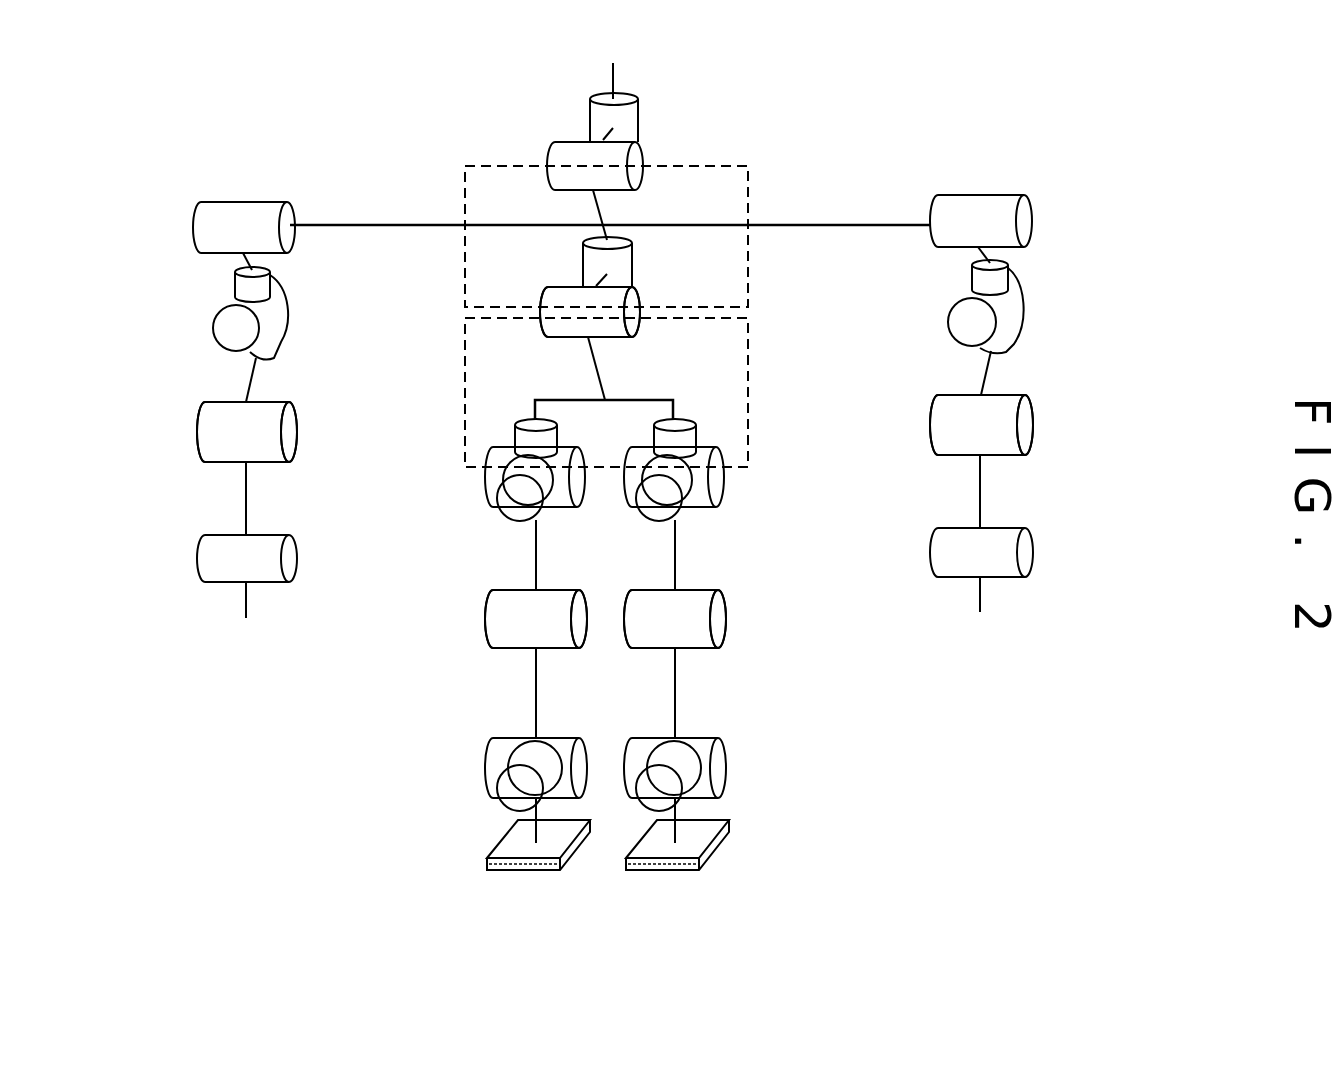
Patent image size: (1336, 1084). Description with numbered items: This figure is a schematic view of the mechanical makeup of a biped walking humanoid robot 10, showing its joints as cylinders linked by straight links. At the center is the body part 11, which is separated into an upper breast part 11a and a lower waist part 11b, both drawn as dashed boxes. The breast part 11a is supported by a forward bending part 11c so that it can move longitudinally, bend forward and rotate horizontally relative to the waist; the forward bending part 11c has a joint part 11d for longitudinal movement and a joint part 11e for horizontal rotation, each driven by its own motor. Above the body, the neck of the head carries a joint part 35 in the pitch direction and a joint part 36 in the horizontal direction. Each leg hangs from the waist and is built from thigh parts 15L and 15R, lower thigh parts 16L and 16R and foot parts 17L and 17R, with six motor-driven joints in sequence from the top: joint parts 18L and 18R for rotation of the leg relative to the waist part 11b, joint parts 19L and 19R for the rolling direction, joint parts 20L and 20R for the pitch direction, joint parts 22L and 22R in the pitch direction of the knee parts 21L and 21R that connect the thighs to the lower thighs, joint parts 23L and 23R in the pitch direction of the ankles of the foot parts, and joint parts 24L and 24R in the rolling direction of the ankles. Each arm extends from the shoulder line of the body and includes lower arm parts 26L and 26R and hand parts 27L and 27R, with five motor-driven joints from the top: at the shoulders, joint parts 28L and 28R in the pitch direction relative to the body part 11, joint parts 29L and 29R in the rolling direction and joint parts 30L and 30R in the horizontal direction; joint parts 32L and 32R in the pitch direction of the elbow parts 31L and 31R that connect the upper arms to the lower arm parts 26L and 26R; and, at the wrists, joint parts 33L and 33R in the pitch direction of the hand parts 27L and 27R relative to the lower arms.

The biped walking humanoid robot 10 is at (801, 116).
The body part 11 is at (848, 167).
The breast part 11a is at (752, 185).
The waist part 11b is at (752, 335).
The forward bending part 11c is at (748, 312).
The joint part 11d is at (568, 287).
The joint part 11e is at (623, 275).
The joint part 35 is at (575, 147).
The joint part 36 is at (636, 122).
The thigh part 15R is at (536, 548).
The thigh part 15L is at (675, 562).
The lower thigh part 16R is at (536, 688).
The lower thigh part 16L is at (675, 688).
The foot part 17R is at (525, 848).
The foot part 17L is at (663, 848).
The joint part 18R is at (515, 430).
The joint part 18L is at (700, 440).
The joint part 19R is at (498, 505).
The joint part 19L is at (680, 523).
The joint part 20R is at (485, 460).
The joint part 20L is at (720, 480).
The knee part 21R is at (480, 586).
The knee part 21L is at (734, 584).
The joint part 22R is at (485, 612).
The joint part 22L is at (722, 614).
The joint part 23R is at (485, 757).
The joint part 23L is at (720, 768).
The joint part 24R is at (498, 794).
The joint part 24L is at (683, 800).
The lower arm part 26R is at (242, 503).
The lower arm part 26L is at (985, 475).
The hand part 27R is at (245, 603).
The hand part 27L is at (997, 577).
The joint part 28R is at (202, 214).
The joint part 28L is at (1027, 217).
The joint part 29R is at (232, 293).
The joint part 29L is at (1010, 300).
The joint part 30R is at (265, 285).
The joint part 30L is at (1000, 277).
The elbow part 31R is at (192, 410).
The elbow part 31L is at (1022, 385).
The joint part 32R is at (210, 444).
The joint part 32L is at (1025, 432).
The joint part 33R is at (225, 573).
The joint part 33L is at (1010, 528).